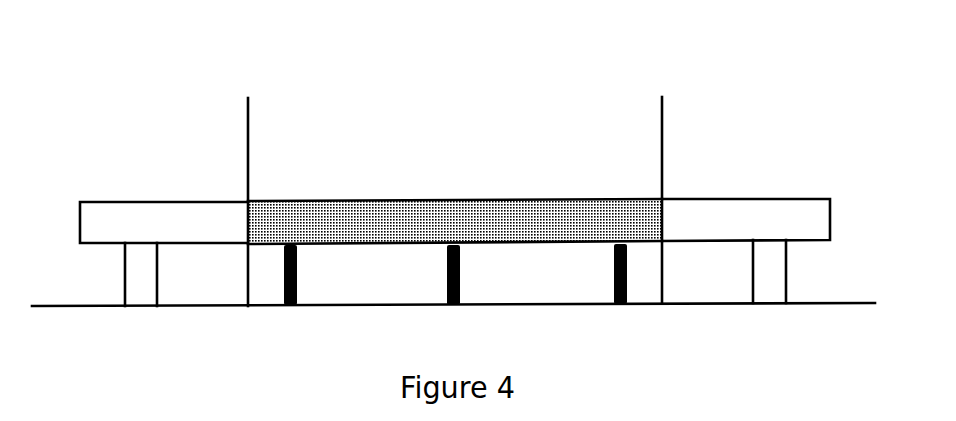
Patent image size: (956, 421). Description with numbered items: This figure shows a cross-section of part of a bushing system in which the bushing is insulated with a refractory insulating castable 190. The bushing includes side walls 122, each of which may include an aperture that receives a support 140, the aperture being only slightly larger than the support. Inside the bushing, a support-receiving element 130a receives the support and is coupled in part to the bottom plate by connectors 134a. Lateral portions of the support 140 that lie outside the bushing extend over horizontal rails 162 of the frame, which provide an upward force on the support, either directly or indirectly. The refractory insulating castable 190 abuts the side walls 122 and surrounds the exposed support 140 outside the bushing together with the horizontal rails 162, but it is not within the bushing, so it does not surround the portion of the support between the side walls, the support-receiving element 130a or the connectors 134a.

The side wall 122 is at (248, 145).
The support-receiving element 130a is at (510, 220).
The connector 134a is at (298, 262).
The support 140 is at (672, 210).
The refractory insulating castable 190 is at (780, 175).
The horizontal rail 162 is at (770, 273).